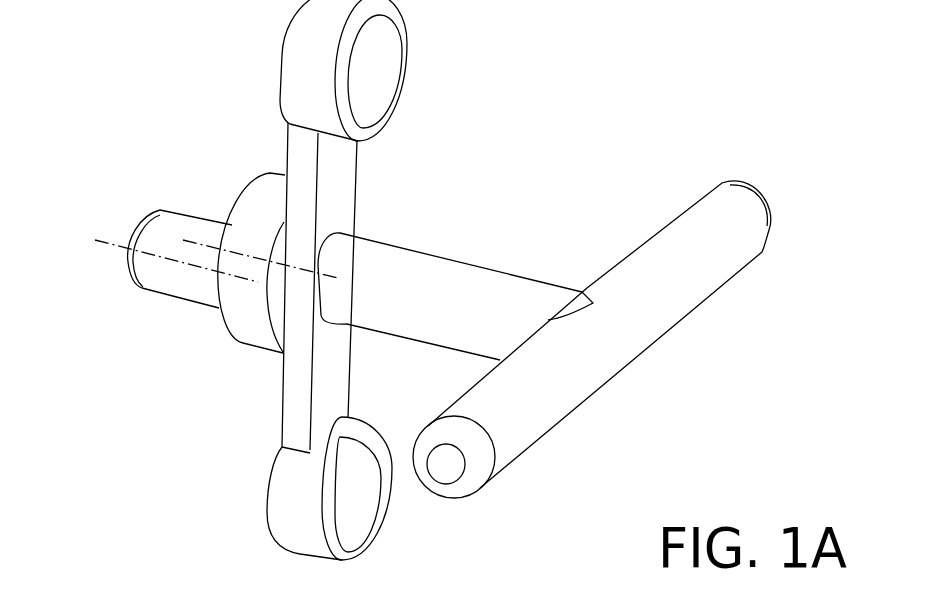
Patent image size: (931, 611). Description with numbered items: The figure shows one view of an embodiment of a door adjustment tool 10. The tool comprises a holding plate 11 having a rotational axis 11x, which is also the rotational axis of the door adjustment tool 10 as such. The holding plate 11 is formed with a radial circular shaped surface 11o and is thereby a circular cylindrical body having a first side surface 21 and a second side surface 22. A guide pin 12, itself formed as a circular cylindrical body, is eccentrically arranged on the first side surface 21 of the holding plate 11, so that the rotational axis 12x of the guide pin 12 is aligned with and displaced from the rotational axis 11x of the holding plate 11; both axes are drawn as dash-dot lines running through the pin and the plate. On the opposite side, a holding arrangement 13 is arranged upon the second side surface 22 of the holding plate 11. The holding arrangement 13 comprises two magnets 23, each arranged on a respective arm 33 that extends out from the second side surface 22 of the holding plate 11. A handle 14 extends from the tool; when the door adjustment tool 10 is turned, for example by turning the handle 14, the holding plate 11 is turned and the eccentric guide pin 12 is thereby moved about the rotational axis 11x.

The door adjustment tool 10 is at (573, 100).
The holding plate 11 is at (235, 234).
The radial circular shaped surface 11o is at (270, 208).
The rotational axis 11x is at (238, 217).
The guide pin 12 is at (145, 290).
The rotational axis 12x is at (175, 263).
The holding arrangement 13 is at (337, 188).
The handle 14 is at (452, 300).
The first side surface 21 is at (180, 180).
The second side surface 22 is at (277, 303).
The magnet 23 is at (377, 73).
The arm 33 is at (335, 155).